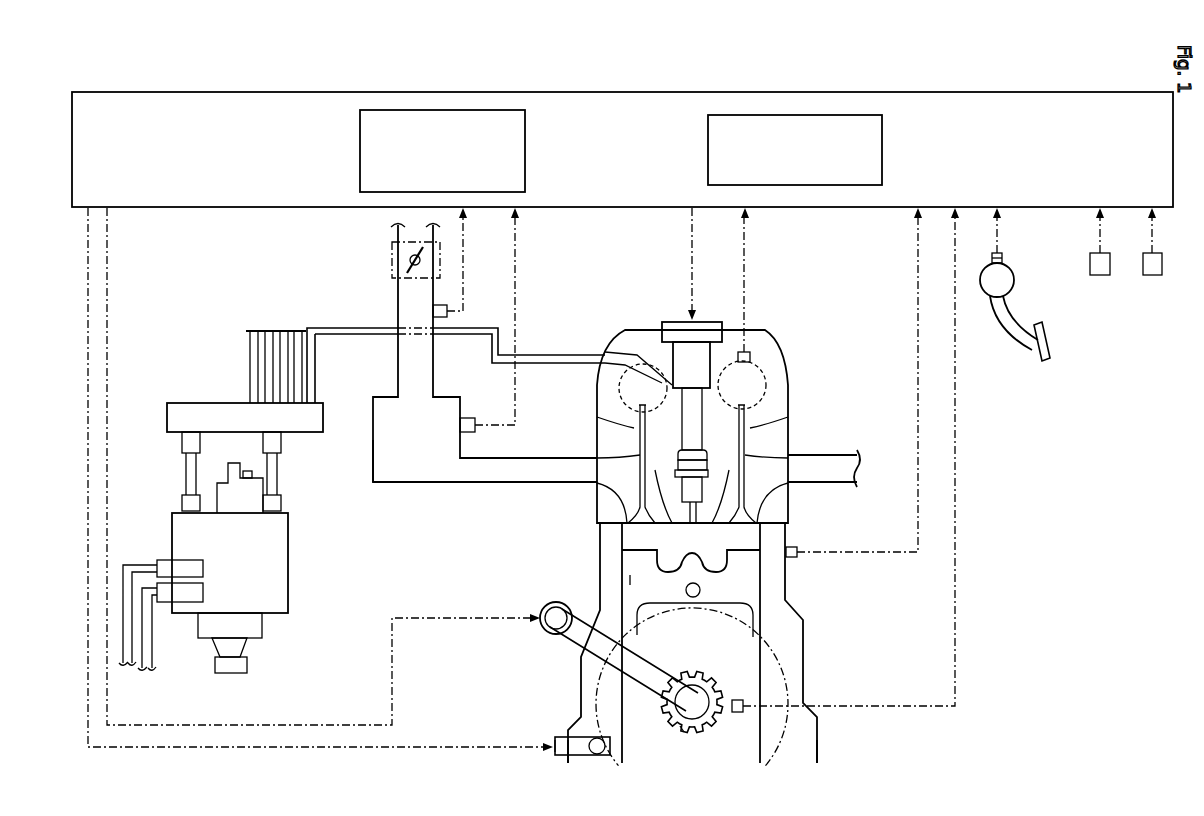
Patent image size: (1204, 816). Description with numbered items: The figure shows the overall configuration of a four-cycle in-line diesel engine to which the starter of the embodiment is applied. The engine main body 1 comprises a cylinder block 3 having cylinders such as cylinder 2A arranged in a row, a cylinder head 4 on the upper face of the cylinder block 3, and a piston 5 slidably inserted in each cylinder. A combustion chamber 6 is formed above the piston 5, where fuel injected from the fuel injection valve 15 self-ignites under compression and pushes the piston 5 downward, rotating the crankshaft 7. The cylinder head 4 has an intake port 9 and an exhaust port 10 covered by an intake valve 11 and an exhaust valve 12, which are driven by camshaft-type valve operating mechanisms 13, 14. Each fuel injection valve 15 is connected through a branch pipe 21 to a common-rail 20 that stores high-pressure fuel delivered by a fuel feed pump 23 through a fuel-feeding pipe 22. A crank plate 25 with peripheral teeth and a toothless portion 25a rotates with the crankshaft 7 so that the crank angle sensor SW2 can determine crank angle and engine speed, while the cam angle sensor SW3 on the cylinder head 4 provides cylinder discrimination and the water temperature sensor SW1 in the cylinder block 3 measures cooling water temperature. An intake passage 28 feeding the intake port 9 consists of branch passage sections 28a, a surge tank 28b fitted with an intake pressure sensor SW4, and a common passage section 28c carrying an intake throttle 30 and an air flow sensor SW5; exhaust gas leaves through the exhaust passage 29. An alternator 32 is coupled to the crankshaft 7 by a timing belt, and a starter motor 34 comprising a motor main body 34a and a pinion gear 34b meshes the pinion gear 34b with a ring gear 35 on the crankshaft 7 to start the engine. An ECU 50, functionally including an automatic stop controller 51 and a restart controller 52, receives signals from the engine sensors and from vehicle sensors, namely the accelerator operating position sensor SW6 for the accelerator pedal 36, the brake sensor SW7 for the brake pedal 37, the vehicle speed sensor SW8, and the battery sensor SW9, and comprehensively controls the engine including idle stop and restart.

The engine main body 1 is at (808, 312).
The cylinder 2A is at (632, 582).
The cylinder block 3 is at (793, 633).
The cylinder head 4 is at (782, 390).
The piston 5 is at (740, 578).
The combustion chamber 6 is at (625, 535).
The crankshaft 7 is at (700, 712).
The intake port 9 is at (605, 495).
The exhaust port 10 is at (775, 490).
The intake valve 11 is at (636, 428).
The exhaust valve 12 is at (748, 422).
The valve operating mechanism 13 is at (620, 388).
The valve operating mechanism 14 is at (760, 362).
The fuel injection valve 15 is at (688, 345).
The common-rail 20 is at (220, 415).
The branch pipe 21 is at (323, 330).
The fuel-feeding pipe 22 is at (283, 470).
The fuel feed pump 23 is at (288, 575).
The crank plate 25 is at (702, 676).
The toothless portion 25a is at (680, 730).
The intake passage 28 is at (482, 388).
The branch passage section 28a is at (495, 482).
The surge tank 28b is at (400, 482).
The common passage section 28c is at (397, 380).
The exhaust passage 29 is at (845, 455).
The intake throttle 30 is at (392, 258).
The alternator 32 is at (543, 612).
The starter motor 34 is at (577, 672).
The motor main body 34a is at (555, 742).
The pinion gear 34b is at (590, 739).
The ring gear 35 is at (790, 735).
The accelerator pedal 36 is at (1016, 350).
The brake pedal 37 is at (1042, 341).
The ECU 50 is at (918, 92).
The automatic stop controller 51 is at (360, 152).
The restart controller 52 is at (882, 150).
The water temperature sensor SW1 is at (797, 550).
The crank angle sensor SW2 is at (738, 700).
The cam angle sensor SW3 is at (748, 352).
The intake pressure sensor SW4 is at (476, 432).
The air flow sensor SW5 is at (441, 318).
The accelerator operating position sensor SW6 is at (1002, 258).
The brake sensor SW7 is at (1031, 264).
The vehicle speed sensor SW8 is at (1100, 275).
The battery sensor SW9 is at (1152, 275).